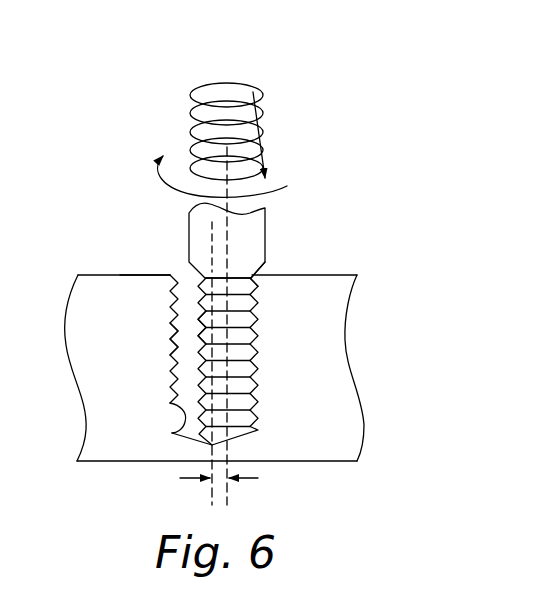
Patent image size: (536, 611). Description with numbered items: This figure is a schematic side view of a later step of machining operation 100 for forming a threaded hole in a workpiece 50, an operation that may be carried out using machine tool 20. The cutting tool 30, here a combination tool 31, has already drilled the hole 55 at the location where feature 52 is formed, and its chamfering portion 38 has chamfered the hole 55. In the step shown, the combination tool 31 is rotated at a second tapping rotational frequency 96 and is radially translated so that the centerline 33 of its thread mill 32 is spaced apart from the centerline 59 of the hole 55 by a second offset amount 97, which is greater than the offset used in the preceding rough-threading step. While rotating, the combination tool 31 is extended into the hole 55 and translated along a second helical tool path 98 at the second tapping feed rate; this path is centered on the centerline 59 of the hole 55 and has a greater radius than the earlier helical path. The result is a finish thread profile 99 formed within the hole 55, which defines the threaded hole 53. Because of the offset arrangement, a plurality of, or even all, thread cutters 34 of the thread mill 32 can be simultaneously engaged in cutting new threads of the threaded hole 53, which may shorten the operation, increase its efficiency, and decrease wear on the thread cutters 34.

The machine tool 20 is at (78, 138).
The machining operation 100 is at (80, 194).
The cutting tool 30 is at (280, 237).
The combination tool 31 is at (268, 262).
The thread mill 32 is at (260, 357).
The centerline of thread mill 33 is at (227, 493).
The thread cutters 34 is at (176, 309).
The chamfering portion 38 is at (259, 280).
The workpiece 50 is at (347, 311).
The feature 52 is at (152, 366).
The threaded hole 53 is at (158, 348).
The hole 55 is at (185, 284).
The centerline of hole 59 is at (210, 493).
The second tapping rotational frequency 96 is at (287, 186).
The second offset amount 97 is at (258, 478).
The second helical tool path 98 is at (262, 93).
The finish thread profile 99 is at (174, 433).